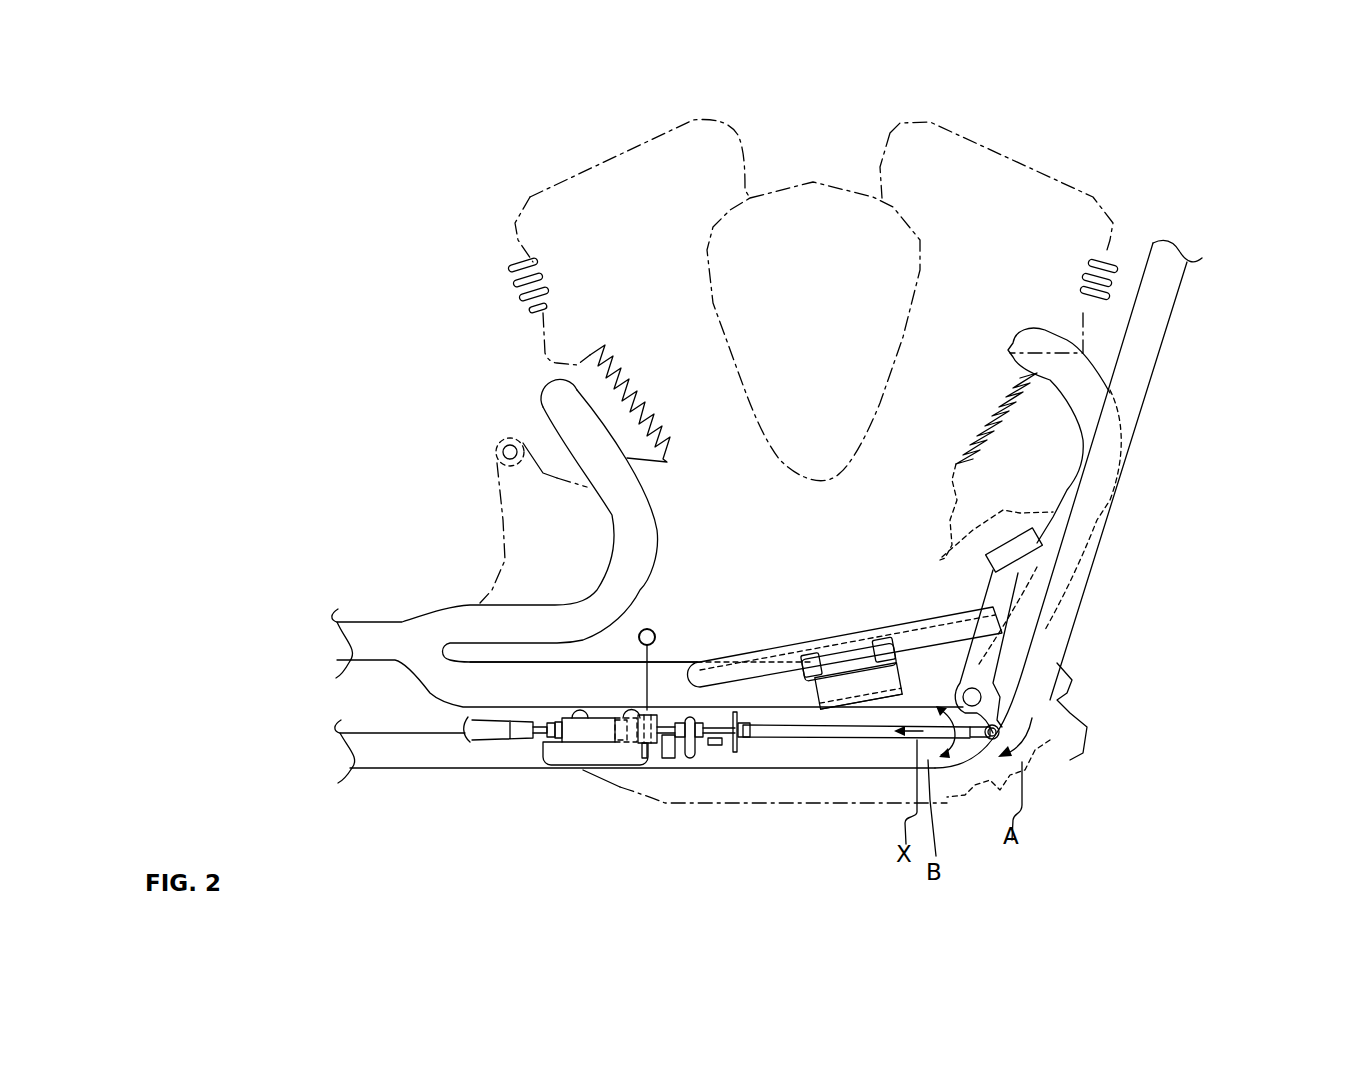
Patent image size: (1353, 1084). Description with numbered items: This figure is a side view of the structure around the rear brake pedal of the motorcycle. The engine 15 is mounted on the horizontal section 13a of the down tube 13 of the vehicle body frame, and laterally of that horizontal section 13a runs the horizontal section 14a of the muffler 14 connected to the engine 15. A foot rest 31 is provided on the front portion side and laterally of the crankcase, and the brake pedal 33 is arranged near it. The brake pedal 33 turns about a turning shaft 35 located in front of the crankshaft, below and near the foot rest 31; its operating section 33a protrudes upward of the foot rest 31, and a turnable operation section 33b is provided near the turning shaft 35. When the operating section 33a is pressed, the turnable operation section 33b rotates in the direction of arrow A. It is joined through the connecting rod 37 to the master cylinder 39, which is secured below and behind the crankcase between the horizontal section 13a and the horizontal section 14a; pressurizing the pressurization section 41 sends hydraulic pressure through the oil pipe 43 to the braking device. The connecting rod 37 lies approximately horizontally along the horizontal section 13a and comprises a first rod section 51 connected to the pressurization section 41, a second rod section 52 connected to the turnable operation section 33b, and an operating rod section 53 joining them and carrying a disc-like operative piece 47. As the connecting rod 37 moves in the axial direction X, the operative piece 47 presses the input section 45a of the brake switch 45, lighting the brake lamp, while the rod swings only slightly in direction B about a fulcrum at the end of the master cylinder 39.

The down tube 13 is at (1178, 298).
The horizontal section of the down tube 13a is at (400, 769).
The muffler 14 is at (375, 621).
The horizontal section of the muffler 14a is at (665, 662).
The engine 15 is at (1034, 168).
The foot rest 31 is at (840, 636).
The brake pedal 33 is at (1018, 630).
The operating section 33a is at (1048, 565).
The turnable operation section 33b is at (1000, 713).
The turning shaft 35 is at (988, 694).
The connecting rod 37 is at (863, 739).
The master cylinder 39 is at (575, 765).
The pressurization section 41 is at (623, 745).
The oil pipe 43 is at (487, 741).
The brake switch 45 is at (717, 760).
The input section 45a is at (727, 760).
The operative piece 47 is at (740, 752).
The first rod section 51 is at (663, 750).
The second rod section 52 is at (823, 745).
The operating rod section 53 is at (718, 705).